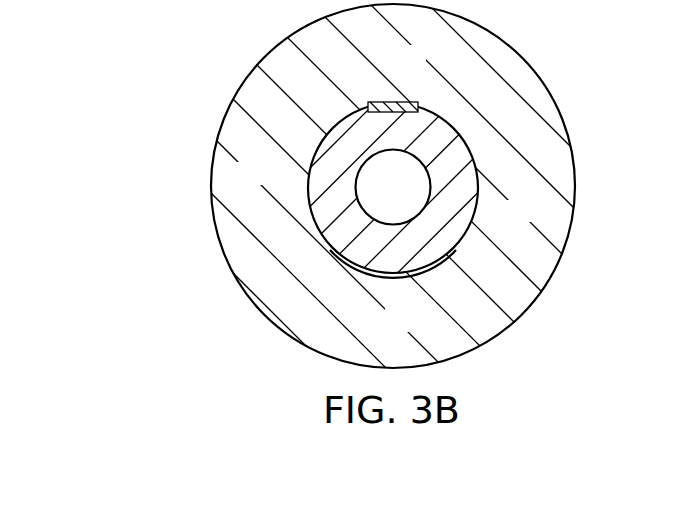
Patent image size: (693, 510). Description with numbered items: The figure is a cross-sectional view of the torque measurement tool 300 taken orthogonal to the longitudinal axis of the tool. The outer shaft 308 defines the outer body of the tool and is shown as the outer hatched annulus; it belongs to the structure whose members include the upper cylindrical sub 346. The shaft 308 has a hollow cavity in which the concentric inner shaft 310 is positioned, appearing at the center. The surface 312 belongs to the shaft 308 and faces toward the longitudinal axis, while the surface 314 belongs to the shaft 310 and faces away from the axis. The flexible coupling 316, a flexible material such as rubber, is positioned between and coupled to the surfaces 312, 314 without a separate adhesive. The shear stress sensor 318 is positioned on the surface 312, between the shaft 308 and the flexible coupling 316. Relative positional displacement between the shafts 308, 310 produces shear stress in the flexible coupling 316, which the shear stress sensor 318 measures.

The torque measurement tool 300 is at (346, 255).
The shaft 308 is at (565, 168).
The upper cylindrical sub 346 is at (275, 60).
The surface 312 is at (308, 166).
The surface 314 is at (480, 200).
The shaft 310 is at (413, 198).
The flexible coupling 316 is at (420, 262).
The shear stress sensor 318 is at (393, 104).